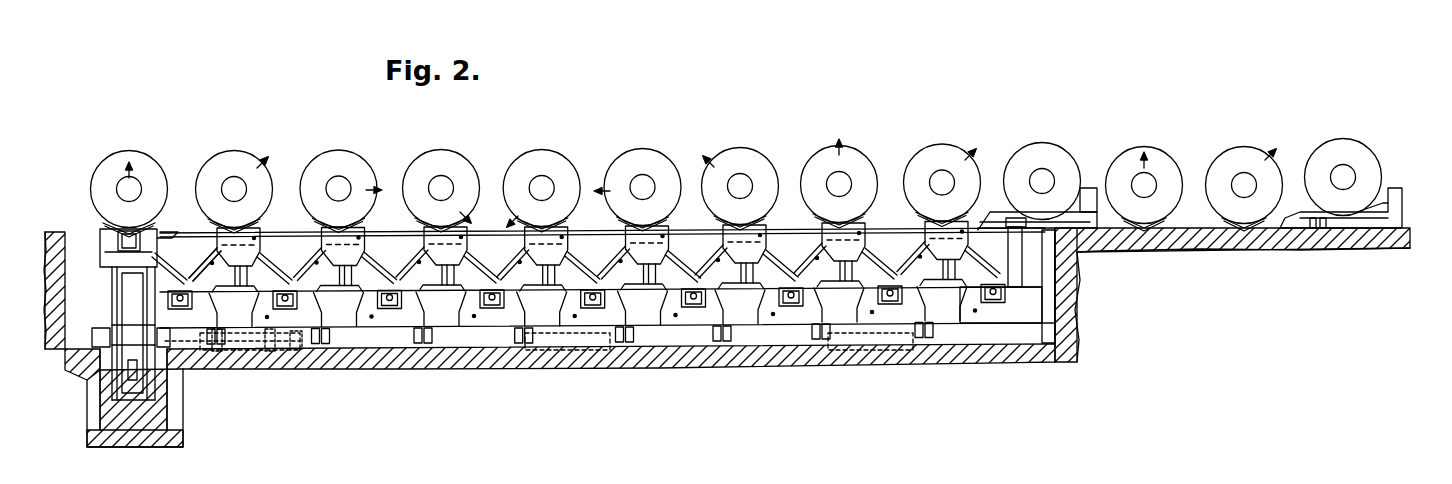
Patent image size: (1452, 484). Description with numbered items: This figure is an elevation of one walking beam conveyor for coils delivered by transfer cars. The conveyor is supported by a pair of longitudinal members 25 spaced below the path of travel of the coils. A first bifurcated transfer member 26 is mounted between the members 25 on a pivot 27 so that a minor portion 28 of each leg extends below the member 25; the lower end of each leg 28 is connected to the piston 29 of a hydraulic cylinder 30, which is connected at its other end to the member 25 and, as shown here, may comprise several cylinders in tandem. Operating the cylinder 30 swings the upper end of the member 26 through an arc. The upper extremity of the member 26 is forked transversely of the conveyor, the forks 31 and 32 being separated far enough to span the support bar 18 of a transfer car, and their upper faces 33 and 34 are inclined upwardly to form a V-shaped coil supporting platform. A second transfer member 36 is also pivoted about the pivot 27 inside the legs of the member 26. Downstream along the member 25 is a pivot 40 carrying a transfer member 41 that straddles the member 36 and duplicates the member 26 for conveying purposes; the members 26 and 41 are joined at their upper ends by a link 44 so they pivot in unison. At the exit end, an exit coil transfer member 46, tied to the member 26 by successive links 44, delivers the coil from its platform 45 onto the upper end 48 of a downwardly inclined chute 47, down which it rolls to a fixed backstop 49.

The horizontal support bar 18 is at (147, 237).
The longitudinal member 25 is at (337, 312).
The first bifurcated transfer member 26 is at (125, 272).
The pivot 27 is at (213, 342).
The leg minor portion 28 is at (236, 368).
The piston 29 is at (258, 372).
The hydraulic cylinder 30 is at (297, 377).
The fork 31 is at (108, 242).
The fork 32 is at (170, 232).
The upper face 33 is at (114, 228).
The upper face 34 is at (158, 232).
The second transfer member 36 is at (190, 237).
The pivot 40 is at (287, 290).
The transfer member 41 is at (262, 272).
The link 44 is at (897, 262).
The platform 45 is at (950, 213).
The exit coil transfer member 46 is at (973, 270).
The chute 47 is at (1055, 254).
The chute upper end 48 is at (997, 211).
The backstop 49 is at (1090, 197).